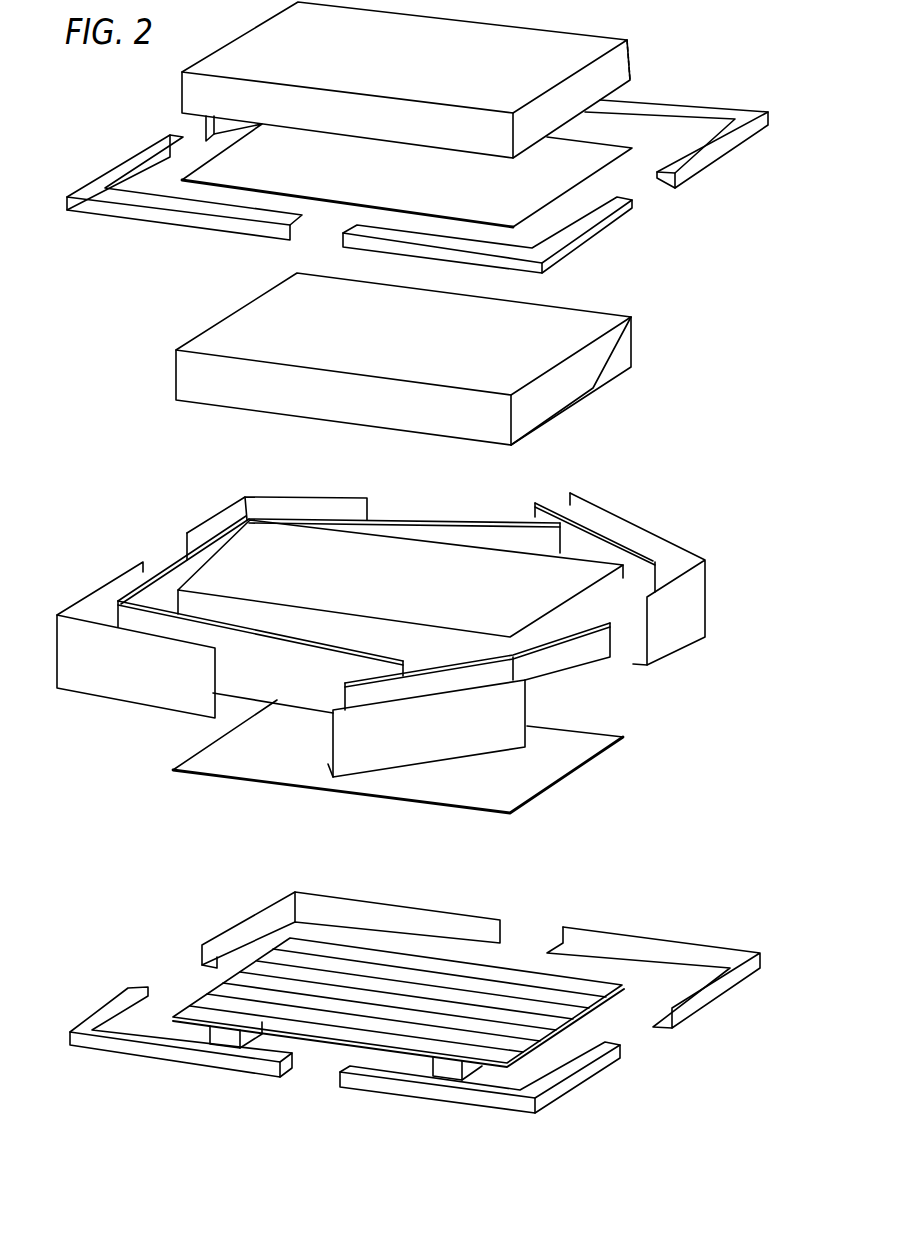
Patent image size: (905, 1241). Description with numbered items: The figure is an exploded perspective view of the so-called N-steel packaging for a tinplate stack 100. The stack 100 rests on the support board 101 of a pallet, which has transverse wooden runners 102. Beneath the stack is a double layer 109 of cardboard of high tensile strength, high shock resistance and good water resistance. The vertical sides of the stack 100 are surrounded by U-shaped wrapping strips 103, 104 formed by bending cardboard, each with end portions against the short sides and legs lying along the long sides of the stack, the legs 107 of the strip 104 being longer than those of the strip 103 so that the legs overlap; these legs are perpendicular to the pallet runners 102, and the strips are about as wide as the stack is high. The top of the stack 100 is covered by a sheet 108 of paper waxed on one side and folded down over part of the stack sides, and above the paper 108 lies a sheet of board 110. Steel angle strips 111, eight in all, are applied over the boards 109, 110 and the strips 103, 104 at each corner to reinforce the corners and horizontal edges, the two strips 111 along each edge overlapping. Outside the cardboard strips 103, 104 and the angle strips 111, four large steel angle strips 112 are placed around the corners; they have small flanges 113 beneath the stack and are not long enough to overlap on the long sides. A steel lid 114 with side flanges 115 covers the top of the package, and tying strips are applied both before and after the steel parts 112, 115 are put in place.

The tinplate stack 100 is at (400, 616).
The support board 101 is at (503, 970).
The runners 102 is at (433, 1055).
The wrapping strip 103 is at (625, 617).
The wrapping strip 104 is at (175, 578).
The legs 107 is at (477, 532).
The sheet of paper 108 is at (403, 359).
The double layer of cardboard 109 is at (398, 756).
The sheet of board 110 is at (407, 171).
The angle strip 111 is at (196, 131).
The large angle strip 112 is at (226, 517).
The flange 113 is at (646, 672).
The steel lid 114 is at (404, 57).
The side flanges 115 is at (655, 68).